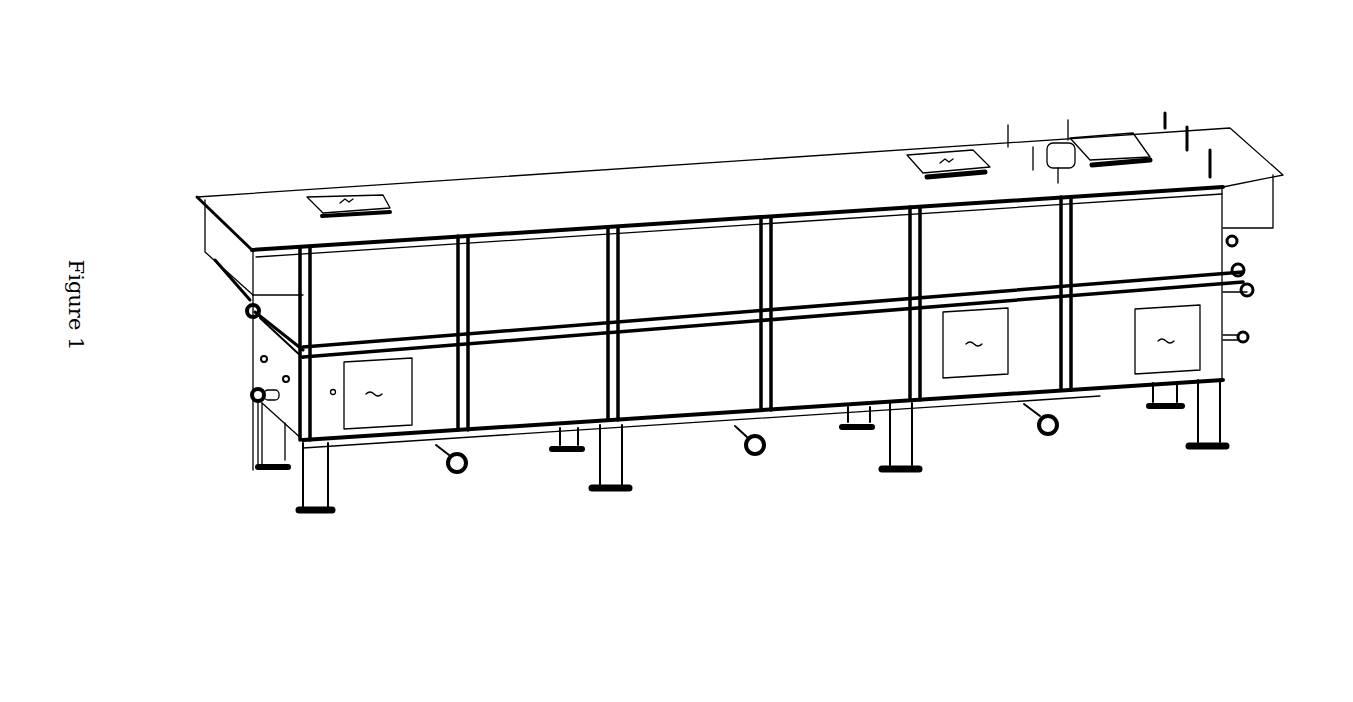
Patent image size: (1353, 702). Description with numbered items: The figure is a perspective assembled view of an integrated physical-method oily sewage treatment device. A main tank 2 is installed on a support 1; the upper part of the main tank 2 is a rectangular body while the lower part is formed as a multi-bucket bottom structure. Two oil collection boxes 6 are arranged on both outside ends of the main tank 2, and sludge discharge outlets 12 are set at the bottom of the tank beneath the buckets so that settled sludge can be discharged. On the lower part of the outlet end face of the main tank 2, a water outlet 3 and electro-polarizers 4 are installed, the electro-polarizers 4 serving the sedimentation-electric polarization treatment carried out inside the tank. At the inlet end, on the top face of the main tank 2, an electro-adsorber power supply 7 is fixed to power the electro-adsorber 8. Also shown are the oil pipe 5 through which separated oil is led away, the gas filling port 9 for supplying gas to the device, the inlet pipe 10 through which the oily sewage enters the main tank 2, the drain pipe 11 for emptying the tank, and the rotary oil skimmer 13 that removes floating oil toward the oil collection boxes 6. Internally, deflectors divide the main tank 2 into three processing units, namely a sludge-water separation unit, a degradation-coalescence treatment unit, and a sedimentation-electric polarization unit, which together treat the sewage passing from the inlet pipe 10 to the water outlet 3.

The support 1 is at (327, 424).
The main tank 2 is at (255, 466).
The water outlet 3 is at (257, 398).
The electro-polarizer 4 is at (284, 379).
The oil pipe 5 is at (247, 310).
The oil collection boxes 6 is at (248, 302).
The electro-adsorber power supply 7 is at (1040, 140).
The electro-adsorber 8 is at (1165, 113).
The gas filling port 9 is at (1240, 270).
The inlet pipe 10 is at (1253, 290).
The drain pipe 11 is at (1248, 332).
The sludge discharge outlet 12 is at (459, 473).
The rotary oil skimmer 13 is at (1103, 133).